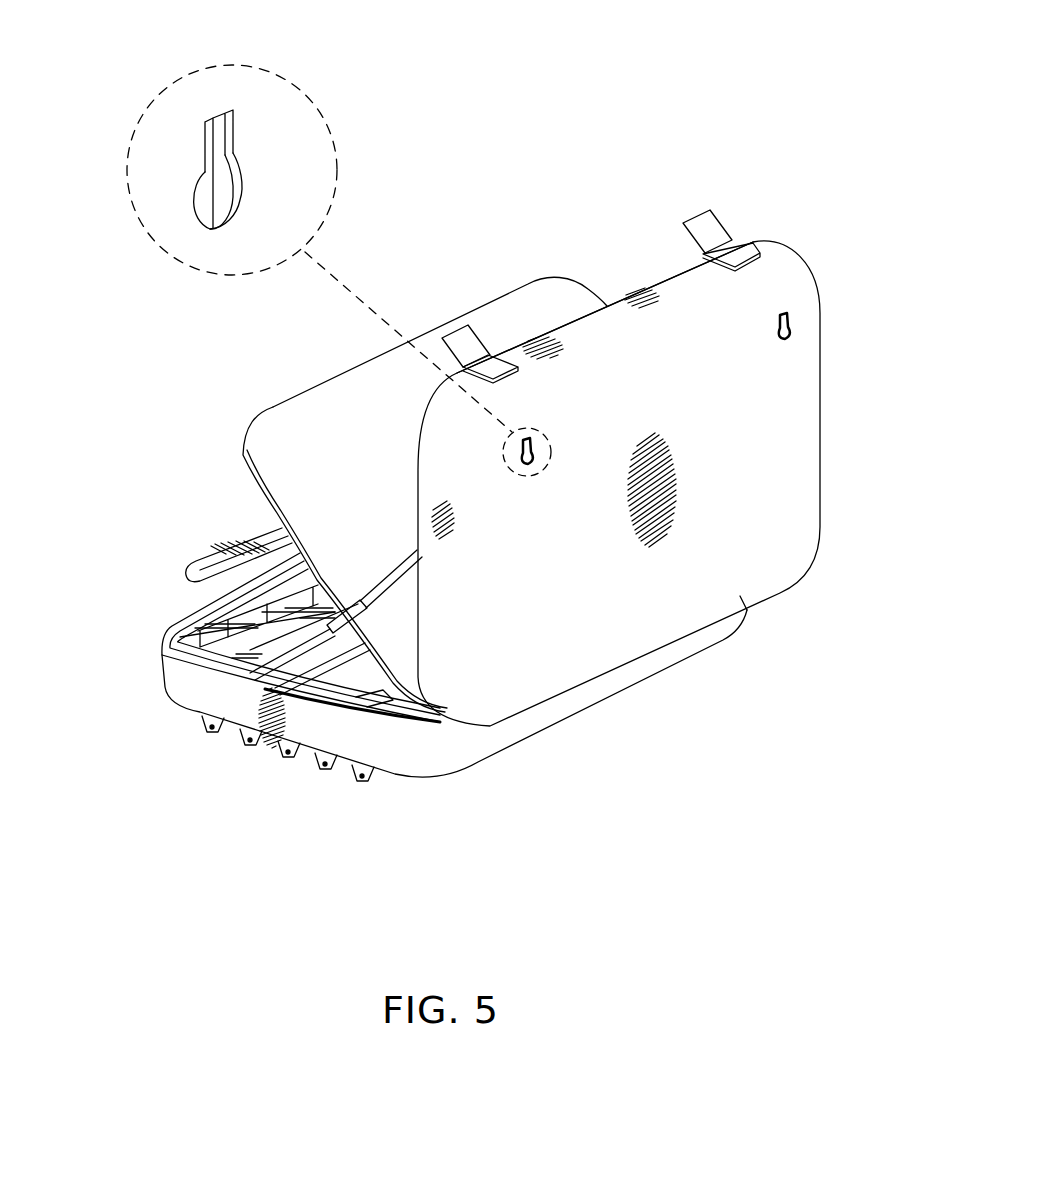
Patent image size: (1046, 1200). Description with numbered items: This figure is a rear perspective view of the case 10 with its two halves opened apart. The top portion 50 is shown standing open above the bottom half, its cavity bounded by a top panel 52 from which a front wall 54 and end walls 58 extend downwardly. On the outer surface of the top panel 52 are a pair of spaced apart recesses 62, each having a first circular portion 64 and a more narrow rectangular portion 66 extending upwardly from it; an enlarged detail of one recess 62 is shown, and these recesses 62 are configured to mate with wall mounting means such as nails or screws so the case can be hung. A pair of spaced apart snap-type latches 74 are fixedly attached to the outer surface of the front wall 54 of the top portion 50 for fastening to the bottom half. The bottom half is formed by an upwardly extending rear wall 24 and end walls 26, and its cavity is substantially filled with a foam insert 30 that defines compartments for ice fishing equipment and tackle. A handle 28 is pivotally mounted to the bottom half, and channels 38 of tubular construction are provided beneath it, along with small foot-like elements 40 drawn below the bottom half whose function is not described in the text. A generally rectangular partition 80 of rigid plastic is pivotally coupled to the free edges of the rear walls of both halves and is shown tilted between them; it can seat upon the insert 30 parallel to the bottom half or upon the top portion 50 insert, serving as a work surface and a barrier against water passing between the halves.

The case 10 is at (499, 87).
The rear wall 24 is at (503, 748).
The end walls 26 is at (168, 695).
The handle 28 is at (228, 545).
The insert 30 is at (365, 698).
The channels 38 is at (261, 741).
The feet 40 is at (244, 742).
The top portion 50 is at (849, 453).
The top panel 52 is at (604, 547).
The front wall 54 is at (678, 270).
The end walls 58 is at (445, 655).
The recesses 62 is at (761, 343).
The first circular portion 64 is at (236, 188).
The rectangular portion 66 is at (227, 133).
The snap-type latches 74 is at (474, 332).
The partition 80 is at (272, 406).